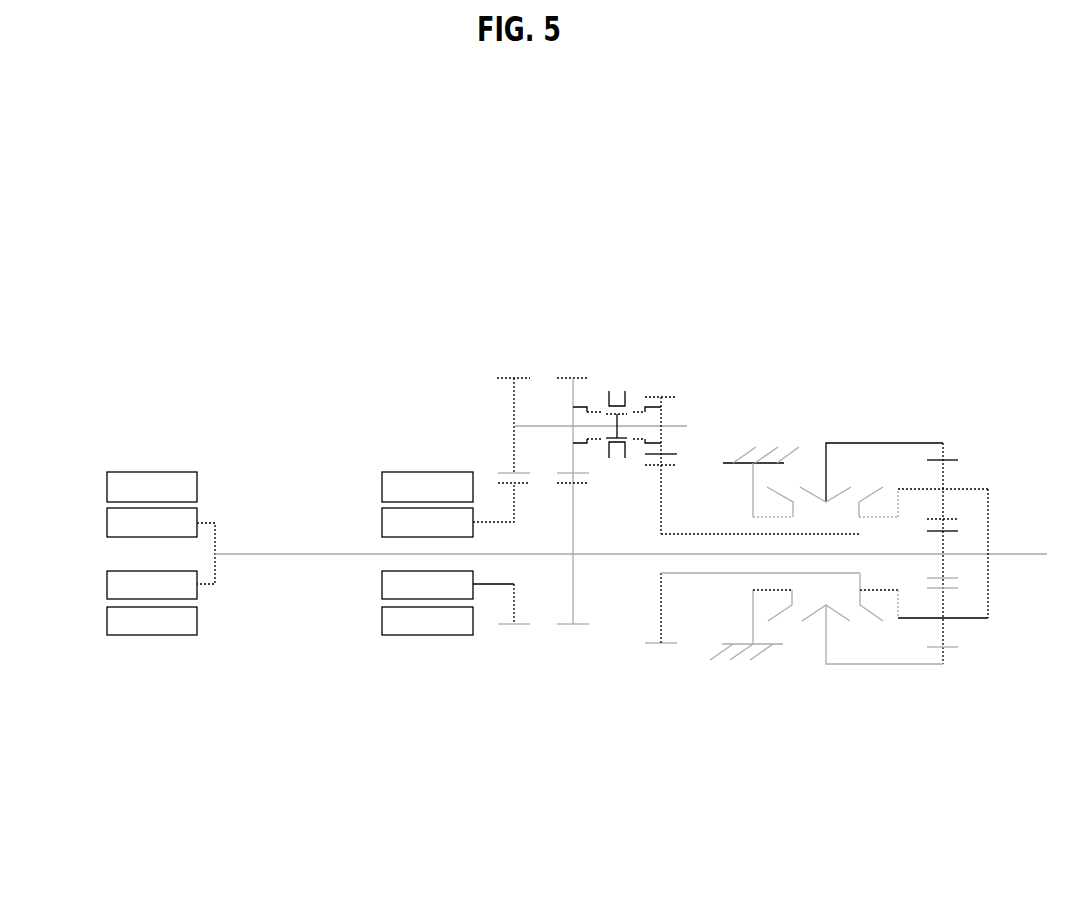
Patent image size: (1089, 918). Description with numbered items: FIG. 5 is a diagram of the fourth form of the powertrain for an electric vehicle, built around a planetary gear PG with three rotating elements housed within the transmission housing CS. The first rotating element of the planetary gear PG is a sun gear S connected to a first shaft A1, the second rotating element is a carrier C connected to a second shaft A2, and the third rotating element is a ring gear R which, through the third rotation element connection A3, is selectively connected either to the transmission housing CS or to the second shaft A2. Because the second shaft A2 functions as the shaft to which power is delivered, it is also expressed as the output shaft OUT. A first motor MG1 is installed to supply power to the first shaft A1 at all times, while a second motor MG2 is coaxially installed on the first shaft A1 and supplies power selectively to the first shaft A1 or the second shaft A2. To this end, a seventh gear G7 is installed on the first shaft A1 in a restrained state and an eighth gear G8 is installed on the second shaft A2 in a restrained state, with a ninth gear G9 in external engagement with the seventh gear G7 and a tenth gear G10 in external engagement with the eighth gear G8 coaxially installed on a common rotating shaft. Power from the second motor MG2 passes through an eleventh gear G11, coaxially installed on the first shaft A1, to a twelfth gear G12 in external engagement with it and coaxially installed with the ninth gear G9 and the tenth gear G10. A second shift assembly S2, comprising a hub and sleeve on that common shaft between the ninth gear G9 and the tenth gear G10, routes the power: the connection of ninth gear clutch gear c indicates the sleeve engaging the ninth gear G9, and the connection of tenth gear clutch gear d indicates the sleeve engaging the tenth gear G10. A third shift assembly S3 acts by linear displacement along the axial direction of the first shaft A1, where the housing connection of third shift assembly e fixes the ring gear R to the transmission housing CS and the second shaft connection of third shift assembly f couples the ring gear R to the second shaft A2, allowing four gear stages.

The first motor MG1 is at (161, 543).
The second motor MG2 is at (448, 543).
The twelfth gear G12 is at (506, 378).
The eleventh gear G11 is at (506, 624).
The ninth gear G9 is at (566, 378).
The seventh gear G7 is at (566, 624).
The tenth gear G10 is at (665, 397).
The eighth gear G8 is at (655, 644).
The second shift assembly S2 is at (616, 391).
The connection of ninth gear clutch gear c is at (604, 394).
The connection of tenth gear clutch gear d is at (630, 394).
The transmission housing CS is at (775, 458).
The third rotation element connection A3 is at (895, 443).
The planetary gear PG is at (951, 658).
The ring gear R is at (953, 460).
The carrier C is at (966, 488).
The second shaft A2 is at (985, 489).
The sun gear S is at (955, 527).
The first shaft A1 is at (955, 553).
The output shaft OUT is at (1035, 555).
The third shift assembly S3 is at (812, 621).
The housing connection of third shift assembly e is at (786, 621).
The second shaft connection of third shift assembly f is at (872, 621).